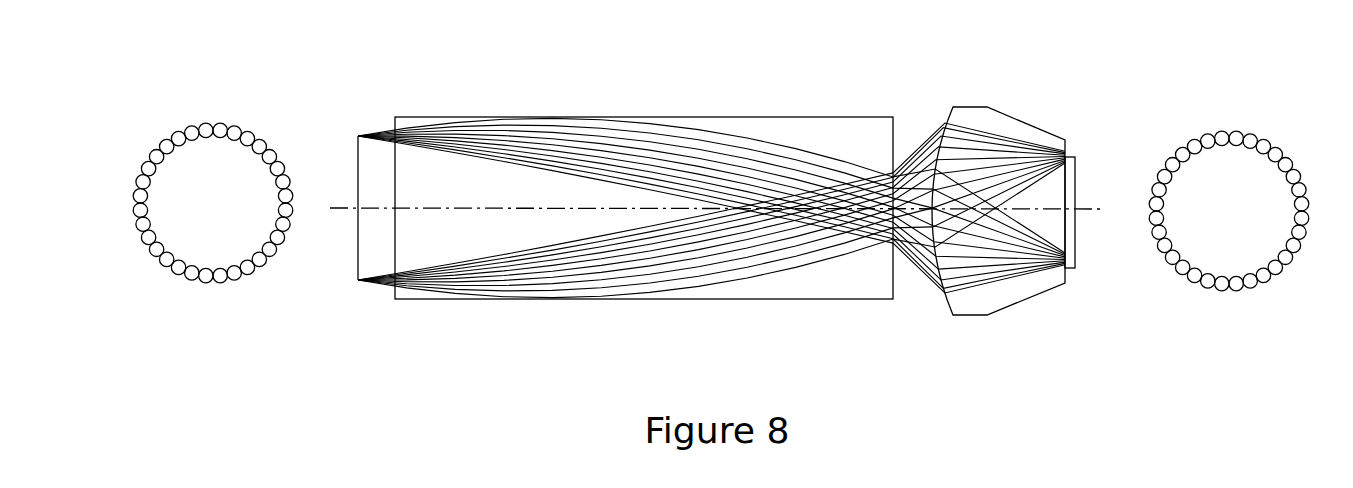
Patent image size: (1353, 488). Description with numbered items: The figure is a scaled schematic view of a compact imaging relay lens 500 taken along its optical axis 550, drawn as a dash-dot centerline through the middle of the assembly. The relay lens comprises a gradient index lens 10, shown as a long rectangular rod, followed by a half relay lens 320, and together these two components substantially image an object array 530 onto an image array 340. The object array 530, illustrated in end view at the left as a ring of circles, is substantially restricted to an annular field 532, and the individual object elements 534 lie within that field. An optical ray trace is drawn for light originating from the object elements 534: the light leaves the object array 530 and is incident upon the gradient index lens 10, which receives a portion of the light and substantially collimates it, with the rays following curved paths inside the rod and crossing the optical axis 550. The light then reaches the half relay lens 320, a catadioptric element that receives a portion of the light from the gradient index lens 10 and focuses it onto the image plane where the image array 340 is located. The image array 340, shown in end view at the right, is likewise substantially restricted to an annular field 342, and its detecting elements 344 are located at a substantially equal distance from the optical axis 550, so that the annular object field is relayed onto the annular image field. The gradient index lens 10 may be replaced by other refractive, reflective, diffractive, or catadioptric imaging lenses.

The compact imaging relay lens 500 is at (376, 57).
The object array 530 is at (357, 170).
The annular field 532 is at (234, 166).
The object elements 534 is at (164, 143).
The gradient index lens 10 is at (815, 299).
The half relay lens 320 is at (1025, 302).
The image array 340 is at (1076, 182).
The annular field 342 is at (1250, 174).
The detecting elements 344 is at (1186, 150).
The optical axis 550 is at (1089, 213).